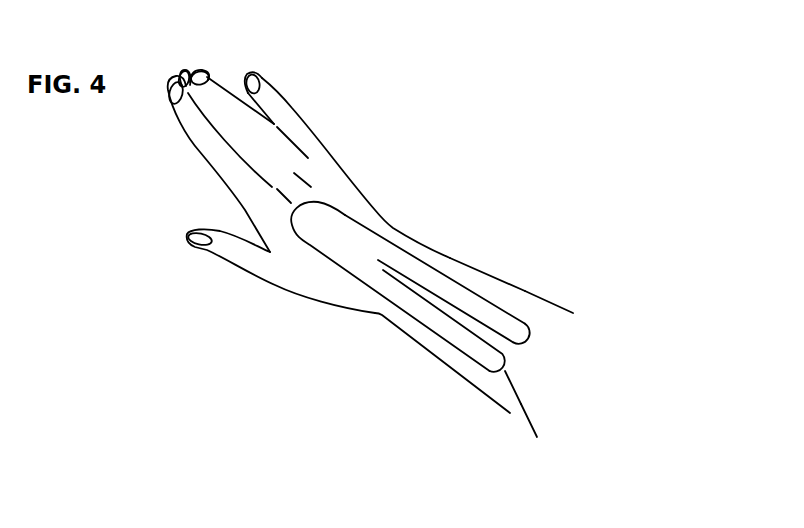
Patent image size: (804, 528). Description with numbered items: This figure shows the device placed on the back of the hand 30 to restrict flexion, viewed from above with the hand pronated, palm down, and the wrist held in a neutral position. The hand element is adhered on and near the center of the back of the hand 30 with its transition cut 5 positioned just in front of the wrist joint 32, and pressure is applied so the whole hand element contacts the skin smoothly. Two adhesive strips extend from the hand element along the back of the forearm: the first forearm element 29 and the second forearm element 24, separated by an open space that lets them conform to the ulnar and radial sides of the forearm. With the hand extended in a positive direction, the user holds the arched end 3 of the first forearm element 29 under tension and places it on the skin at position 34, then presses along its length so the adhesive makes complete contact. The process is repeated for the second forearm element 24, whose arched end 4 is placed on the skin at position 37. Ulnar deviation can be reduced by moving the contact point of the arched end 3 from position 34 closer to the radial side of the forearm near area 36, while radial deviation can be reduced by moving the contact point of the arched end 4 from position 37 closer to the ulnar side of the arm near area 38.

The arched end 3 is at (537, 437).
The arched end 4 is at (529, 339).
The transition cut 5 is at (378, 260).
The second forearm element 24 is at (470, 296).
The first forearm element 29 is at (427, 315).
The back of the hand 30 is at (292, 260).
The wrist joint 32 is at (406, 224).
The position 34 is at (523, 387).
The area 36 is at (487, 389).
The position 37 is at (549, 351).
The area 38 is at (534, 300).